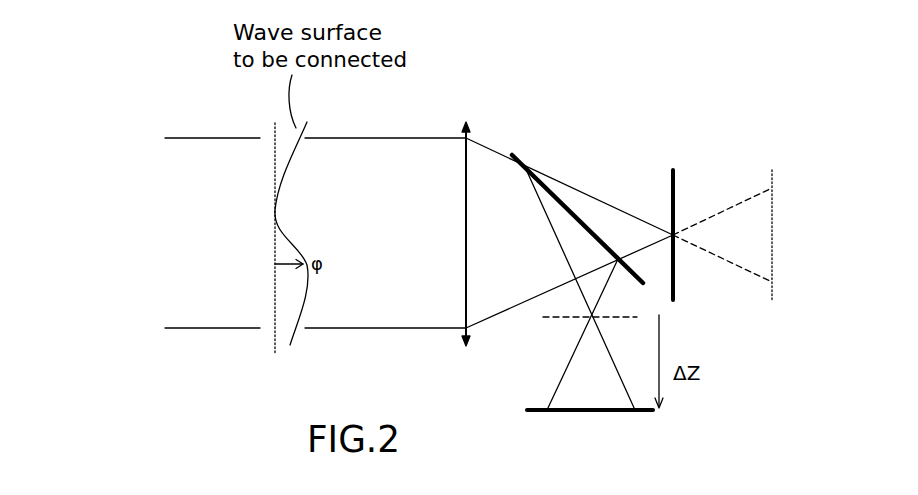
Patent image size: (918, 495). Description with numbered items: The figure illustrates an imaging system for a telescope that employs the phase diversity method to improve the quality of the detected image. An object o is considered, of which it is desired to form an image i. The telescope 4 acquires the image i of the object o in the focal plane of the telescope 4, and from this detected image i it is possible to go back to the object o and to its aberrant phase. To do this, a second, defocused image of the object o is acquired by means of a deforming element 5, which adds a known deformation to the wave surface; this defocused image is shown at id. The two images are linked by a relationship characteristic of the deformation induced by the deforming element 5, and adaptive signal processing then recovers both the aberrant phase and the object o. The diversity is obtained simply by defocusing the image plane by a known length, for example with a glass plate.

The object o is at (181, 218).
The telescope 4 is at (458, 130).
The deforming element 5 is at (557, 192).
The image i is at (670, 167).
The image detector (defocused image plane) id is at (575, 412).